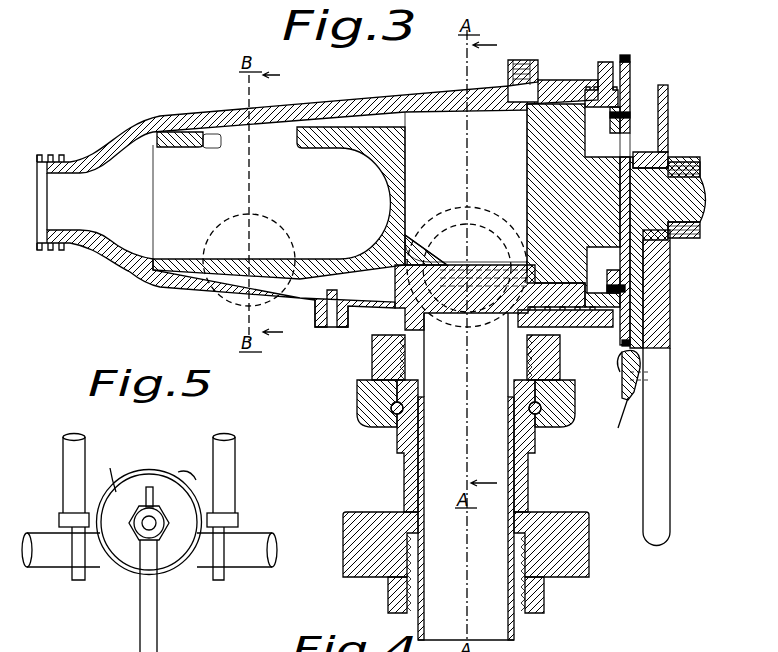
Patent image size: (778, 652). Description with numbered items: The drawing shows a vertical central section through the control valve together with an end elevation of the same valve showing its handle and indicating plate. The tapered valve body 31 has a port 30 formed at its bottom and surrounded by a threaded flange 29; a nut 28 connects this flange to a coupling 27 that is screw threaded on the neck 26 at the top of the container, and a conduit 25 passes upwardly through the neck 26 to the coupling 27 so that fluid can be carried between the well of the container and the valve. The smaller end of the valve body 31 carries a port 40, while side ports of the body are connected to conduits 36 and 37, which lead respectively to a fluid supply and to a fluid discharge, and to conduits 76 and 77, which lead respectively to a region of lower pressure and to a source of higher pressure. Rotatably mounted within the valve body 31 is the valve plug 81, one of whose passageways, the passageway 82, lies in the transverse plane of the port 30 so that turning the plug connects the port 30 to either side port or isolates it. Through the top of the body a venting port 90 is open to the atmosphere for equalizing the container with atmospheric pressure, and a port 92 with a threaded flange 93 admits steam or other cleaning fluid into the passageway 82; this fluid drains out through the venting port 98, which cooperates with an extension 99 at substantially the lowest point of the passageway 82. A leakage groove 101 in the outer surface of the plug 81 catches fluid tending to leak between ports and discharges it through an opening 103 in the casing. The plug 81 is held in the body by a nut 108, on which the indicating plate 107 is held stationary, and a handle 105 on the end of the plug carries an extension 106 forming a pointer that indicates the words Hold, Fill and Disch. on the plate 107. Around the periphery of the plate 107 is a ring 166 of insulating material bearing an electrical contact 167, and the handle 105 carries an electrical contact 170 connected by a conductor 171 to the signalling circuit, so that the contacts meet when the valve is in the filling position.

In FIG. 3, the conduit 25 is at (506, 550).
In FIG. 3, the neck 26 is at (546, 610).
In FIG. 3, the coupling 27 is at (530, 490).
In FIG. 3, the nut 28 is at (570, 402).
In FIG. 3, the threaded flange 29 is at (556, 352).
In FIG. 3, the port 30 is at (466, 355).
In FIG. 3, the valve body 31 is at (400, 96).
In FIG. 5, the conduit 36 is at (43, 566).
In FIG. 5, the conduit 37 is at (256, 566).
In FIG. 3, the port 40 is at (104, 202).
In FIG. 5, the conduit 76 is at (62, 464).
In FIG. 5, the conduit 77 is at (230, 472).
In FIG. 3, the valve plug 81 is at (580, 56).
In FIG. 3, the passageway 82 is at (466, 186).
In FIG. 3, the venting port 90 is at (262, 110).
In FIG. 3, the port 92 is at (526, 98).
In FIG. 3, the threaded flange 93 is at (512, 58).
In FIG. 3, the venting port 98 is at (331, 322).
In FIG. 3, the extension 99 is at (410, 240).
In FIG. 3, the leakage groove 101 is at (482, 268).
In FIG. 3, the opening 103 is at (548, 324).
In FIG. 3, the handle 105 is at (672, 340).
In FIG. 5, the handle 105 is at (148, 612).
In FIG. 3, the extension 106 is at (670, 106).
In FIG. 5, the extension 106 is at (153, 493).
In FIG. 3, the indicating plate 107 is at (632, 82).
In FIG. 5, the indicating plate 107 is at (140, 444).
In FIG. 3, the nut 108 is at (625, 300).
In FIG. 3, the ring 166 is at (628, 54).
In FIG. 5, the ring 166 is at (128, 574).
In FIG. 5, the electrical contact 167 is at (186, 470).
In FIG. 3, the electrical contact 170 is at (618, 428).
In FIG. 3, the conductor 171 is at (640, 408).